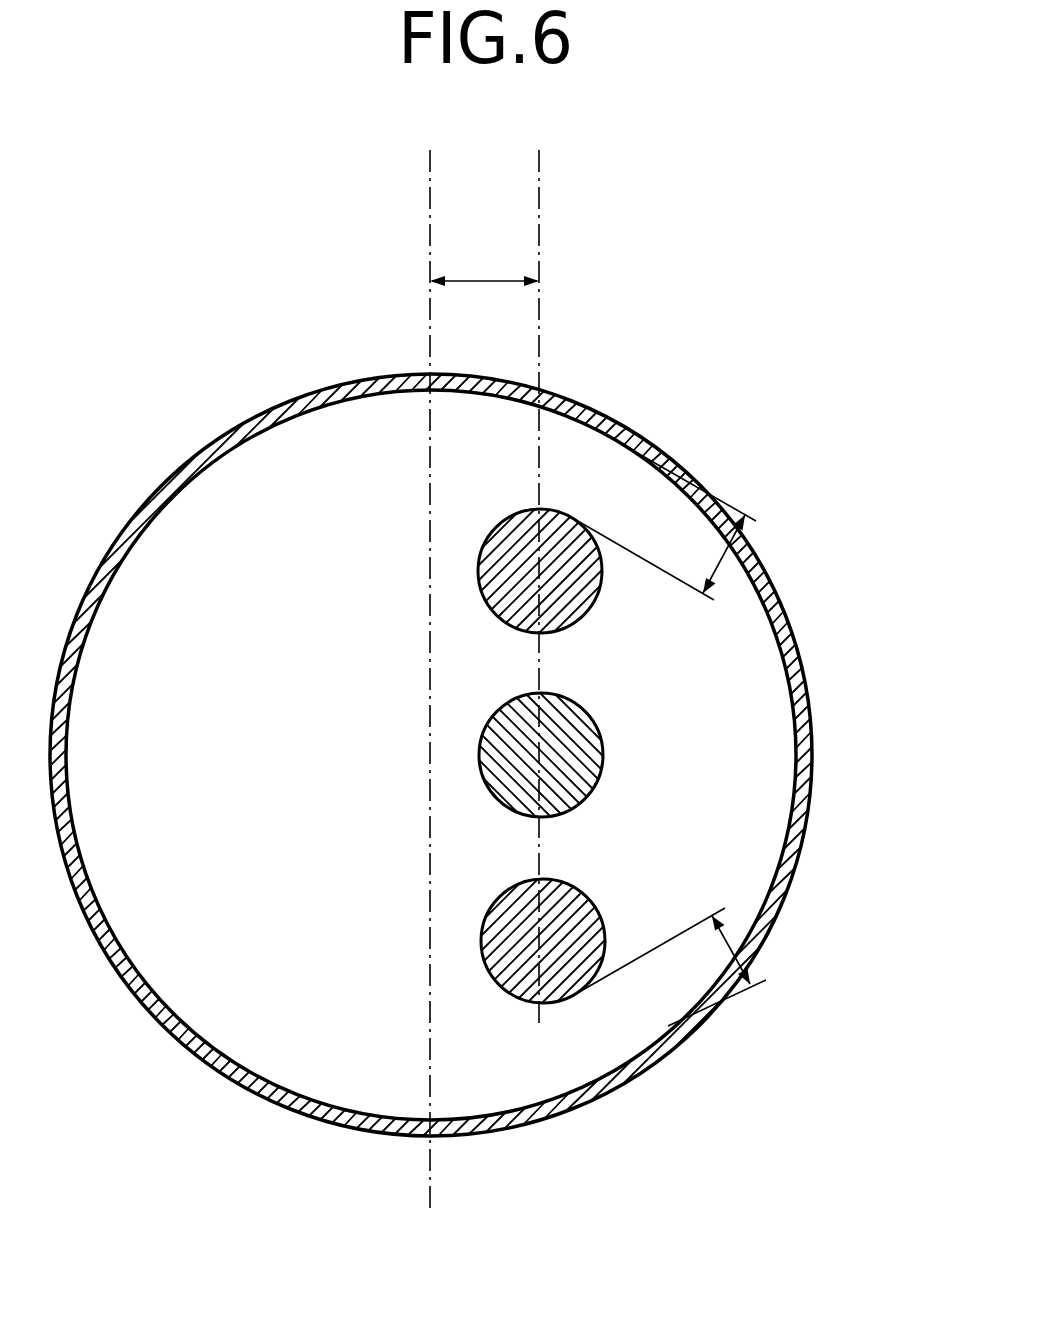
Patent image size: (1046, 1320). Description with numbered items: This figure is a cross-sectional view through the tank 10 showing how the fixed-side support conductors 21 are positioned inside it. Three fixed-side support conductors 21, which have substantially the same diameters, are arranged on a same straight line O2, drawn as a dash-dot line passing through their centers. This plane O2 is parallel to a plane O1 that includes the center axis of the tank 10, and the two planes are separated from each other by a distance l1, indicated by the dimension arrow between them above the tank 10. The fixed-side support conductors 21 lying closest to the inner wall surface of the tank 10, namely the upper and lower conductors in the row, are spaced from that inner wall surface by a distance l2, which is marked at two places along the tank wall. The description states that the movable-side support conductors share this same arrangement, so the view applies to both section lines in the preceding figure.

The tank 10 is at (615, 1087).
The fixed-side support conductor 21 is at (602, 922).
The plane including a center axis of the tank O1 is at (397, 680).
The plane on which the support conductors are arranged O2 is at (571, 588).
The distance between planes O1 and O2 l1 is at (484, 256).
The distance from support conductor to inner wall surface l2 is at (742, 520).